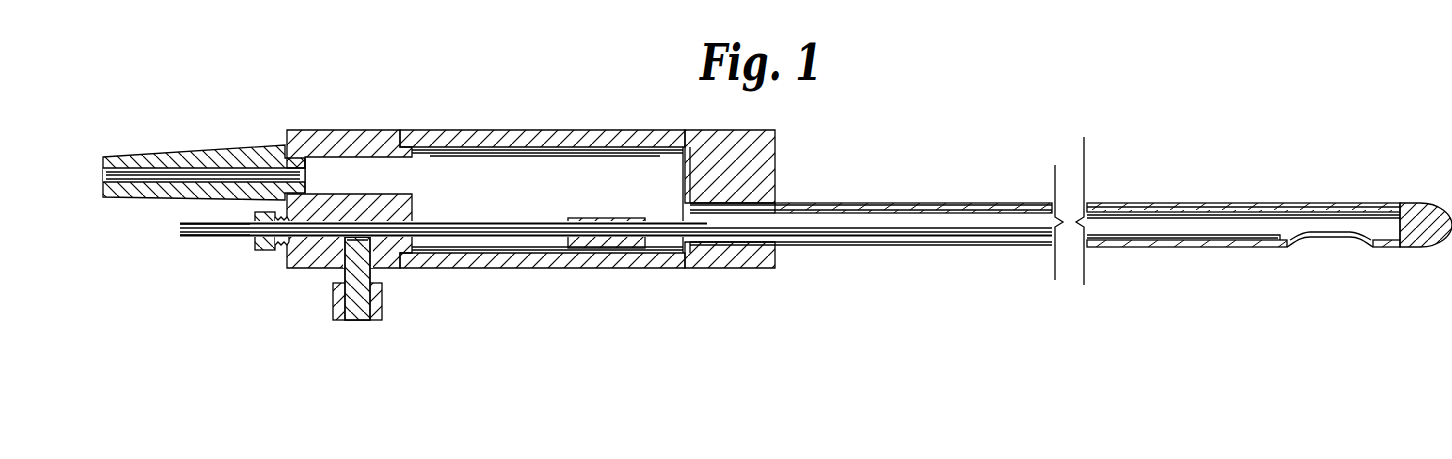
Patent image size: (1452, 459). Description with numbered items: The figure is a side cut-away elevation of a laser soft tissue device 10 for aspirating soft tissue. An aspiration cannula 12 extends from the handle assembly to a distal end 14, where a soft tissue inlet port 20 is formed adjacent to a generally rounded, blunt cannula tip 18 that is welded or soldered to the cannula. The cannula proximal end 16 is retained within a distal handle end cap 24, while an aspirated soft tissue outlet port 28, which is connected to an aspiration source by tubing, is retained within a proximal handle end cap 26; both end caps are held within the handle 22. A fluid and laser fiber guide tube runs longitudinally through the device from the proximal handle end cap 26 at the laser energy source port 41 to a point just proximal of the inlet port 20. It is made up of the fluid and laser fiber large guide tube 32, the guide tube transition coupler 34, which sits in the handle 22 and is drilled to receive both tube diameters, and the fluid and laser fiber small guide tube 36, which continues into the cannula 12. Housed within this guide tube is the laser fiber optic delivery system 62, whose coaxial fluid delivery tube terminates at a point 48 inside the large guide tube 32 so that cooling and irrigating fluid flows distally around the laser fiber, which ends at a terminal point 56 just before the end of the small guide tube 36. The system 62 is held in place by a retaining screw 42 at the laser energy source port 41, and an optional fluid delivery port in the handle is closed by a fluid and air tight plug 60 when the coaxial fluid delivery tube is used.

The laser soft tissue device 10 is at (330, 113).
The aspiration cannula 12 is at (960, 203).
The distal end 14 is at (1375, 205).
The cannula proximal end 16 is at (766, 192).
The cannula tip 18 is at (1442, 218).
The soft tissue inlet port 20 is at (1342, 246).
The handle 22 is at (598, 268).
The distal handle end cap 24 is at (762, 268).
The proximal handle end cap 26 is at (297, 268).
The aspirated soft tissue outlet port 28 is at (120, 198).
The fluid and laser fiber large guide tube 32 is at (448, 212).
The guide tube transition coupler 34 is at (572, 222).
The fluid and laser fiber small guide tube 36 is at (668, 222).
The laser energy source port 41 is at (250, 217).
The retaining screw 42 is at (255, 246).
The terminal point of coaxial fluid delivery tube 48 is at (448, 212).
The terminal point of laser fiber 56 is at (1272, 248).
The fluid and air tight plug 60 is at (358, 322).
The laser fiber optic delivery system 62 is at (200, 222).